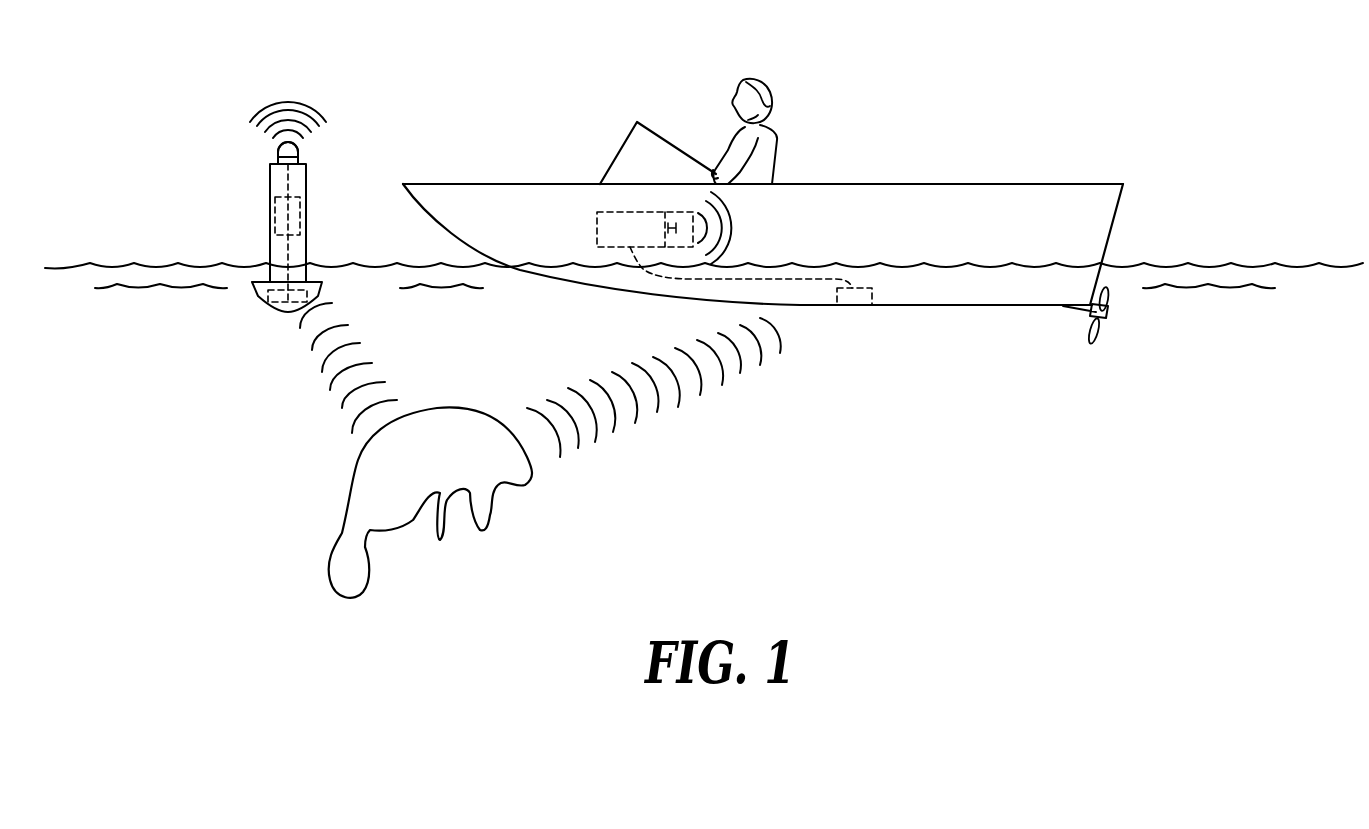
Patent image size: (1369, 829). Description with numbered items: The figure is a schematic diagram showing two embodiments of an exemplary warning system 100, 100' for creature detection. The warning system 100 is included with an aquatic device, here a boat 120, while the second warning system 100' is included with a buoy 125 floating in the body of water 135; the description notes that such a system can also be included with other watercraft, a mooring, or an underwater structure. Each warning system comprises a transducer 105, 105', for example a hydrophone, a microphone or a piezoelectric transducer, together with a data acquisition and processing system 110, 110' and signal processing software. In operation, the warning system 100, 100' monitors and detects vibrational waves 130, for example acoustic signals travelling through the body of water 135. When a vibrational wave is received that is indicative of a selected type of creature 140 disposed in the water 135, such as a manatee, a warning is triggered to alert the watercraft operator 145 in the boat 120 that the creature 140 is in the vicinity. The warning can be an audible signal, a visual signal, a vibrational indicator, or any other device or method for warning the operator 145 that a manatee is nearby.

The warning system 100 is at (763, 213).
The warning system 100' is at (244, 207).
The transducer 105 is at (875, 323).
The transducer 105' is at (246, 317).
The data acquisition and processing system 110 is at (693, 212).
The data acquisition and processing system 110' is at (329, 203).
The boat 120 is at (1101, 193).
The buoy 125 is at (302, 176).
The vibrational waves 130 is at (300, 368).
The body of water 135 is at (1260, 333).
The creature 140 is at (358, 480).
The watercraft operator 145 is at (758, 80).